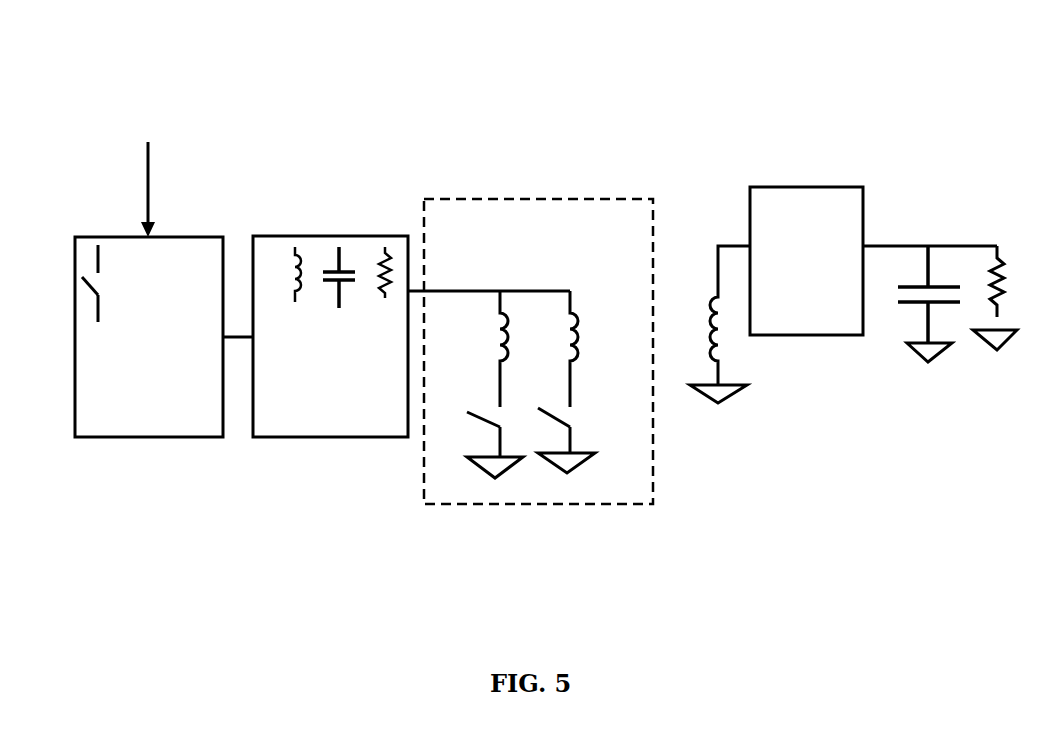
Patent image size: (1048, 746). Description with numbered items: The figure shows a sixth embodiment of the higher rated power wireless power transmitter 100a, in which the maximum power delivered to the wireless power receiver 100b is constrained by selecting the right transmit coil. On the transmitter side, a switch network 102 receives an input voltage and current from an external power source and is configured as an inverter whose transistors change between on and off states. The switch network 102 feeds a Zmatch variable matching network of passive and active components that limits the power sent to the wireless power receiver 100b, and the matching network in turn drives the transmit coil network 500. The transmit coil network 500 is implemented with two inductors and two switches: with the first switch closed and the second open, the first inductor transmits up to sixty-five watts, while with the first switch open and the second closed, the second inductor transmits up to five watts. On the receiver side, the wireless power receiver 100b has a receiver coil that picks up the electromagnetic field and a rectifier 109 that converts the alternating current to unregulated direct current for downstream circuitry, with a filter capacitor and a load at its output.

The wireless power transmitter 100a is at (415, 77).
The wireless power receiver 100b is at (788, 77).
The switch network 102 is at (138, 253).
The transmit coil network 500 is at (550, 207).
The rectifier 109 is at (752, 200).